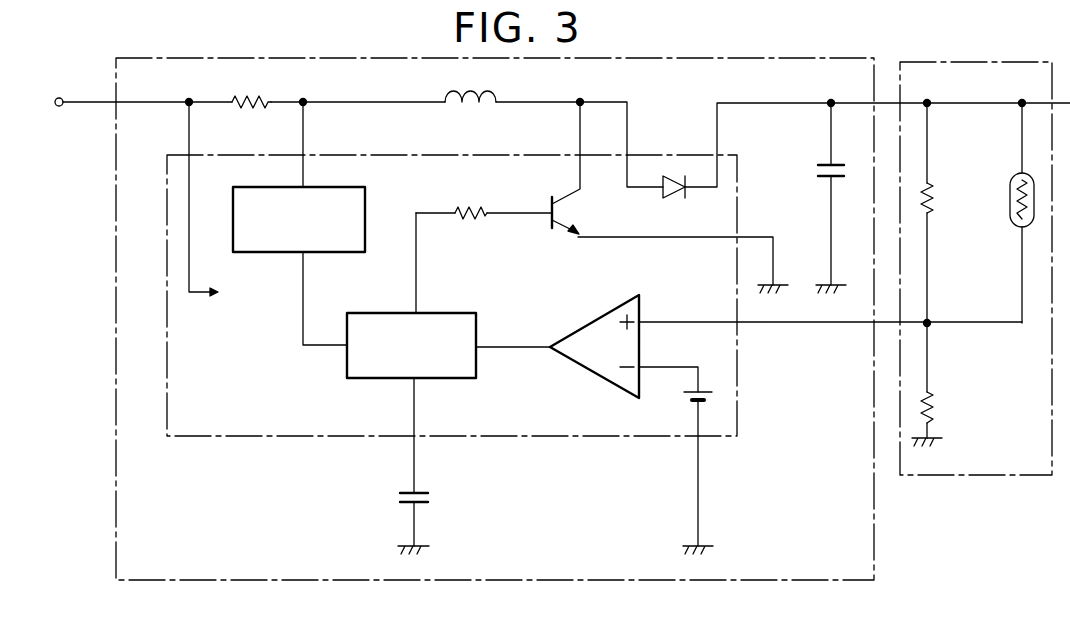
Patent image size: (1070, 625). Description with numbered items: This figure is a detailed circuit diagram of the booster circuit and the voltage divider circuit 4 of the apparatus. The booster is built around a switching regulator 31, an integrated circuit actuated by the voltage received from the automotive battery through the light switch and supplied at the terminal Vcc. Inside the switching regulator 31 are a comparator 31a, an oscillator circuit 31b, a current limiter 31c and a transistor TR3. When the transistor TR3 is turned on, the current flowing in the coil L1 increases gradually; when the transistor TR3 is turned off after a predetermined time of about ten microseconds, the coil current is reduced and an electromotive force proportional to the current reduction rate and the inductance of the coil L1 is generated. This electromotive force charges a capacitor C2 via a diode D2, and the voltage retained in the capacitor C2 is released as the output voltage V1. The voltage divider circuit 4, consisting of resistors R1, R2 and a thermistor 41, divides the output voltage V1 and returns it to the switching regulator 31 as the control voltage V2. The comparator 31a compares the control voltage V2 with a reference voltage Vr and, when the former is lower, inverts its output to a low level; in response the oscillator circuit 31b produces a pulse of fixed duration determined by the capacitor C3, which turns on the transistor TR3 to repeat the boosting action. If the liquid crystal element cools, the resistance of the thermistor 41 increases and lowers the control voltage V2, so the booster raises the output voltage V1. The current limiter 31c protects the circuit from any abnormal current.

The voltage divider circuit 4 is at (995, 62).
The switching regulator 31 is at (740, 377).
The comparator 31a is at (583, 373).
The oscillator circuit 31b is at (447, 380).
The current limiter 31c is at (337, 254).
The thermistor 41 is at (1012, 217).
The transistor TR3 is at (555, 231).
The coil L1 is at (473, 84).
The diode D2 is at (673, 196).
The capacitor C2 is at (815, 173).
The capacitor C3 is at (432, 498).
The resistor R1 is at (935, 193).
The resistor R2 is at (935, 413).
The supply voltage terminal Vcc is at (39, 101).
The output voltage V1 is at (889, 103).
The control voltage V2 is at (885, 324).
The reference voltage Vr is at (708, 396).